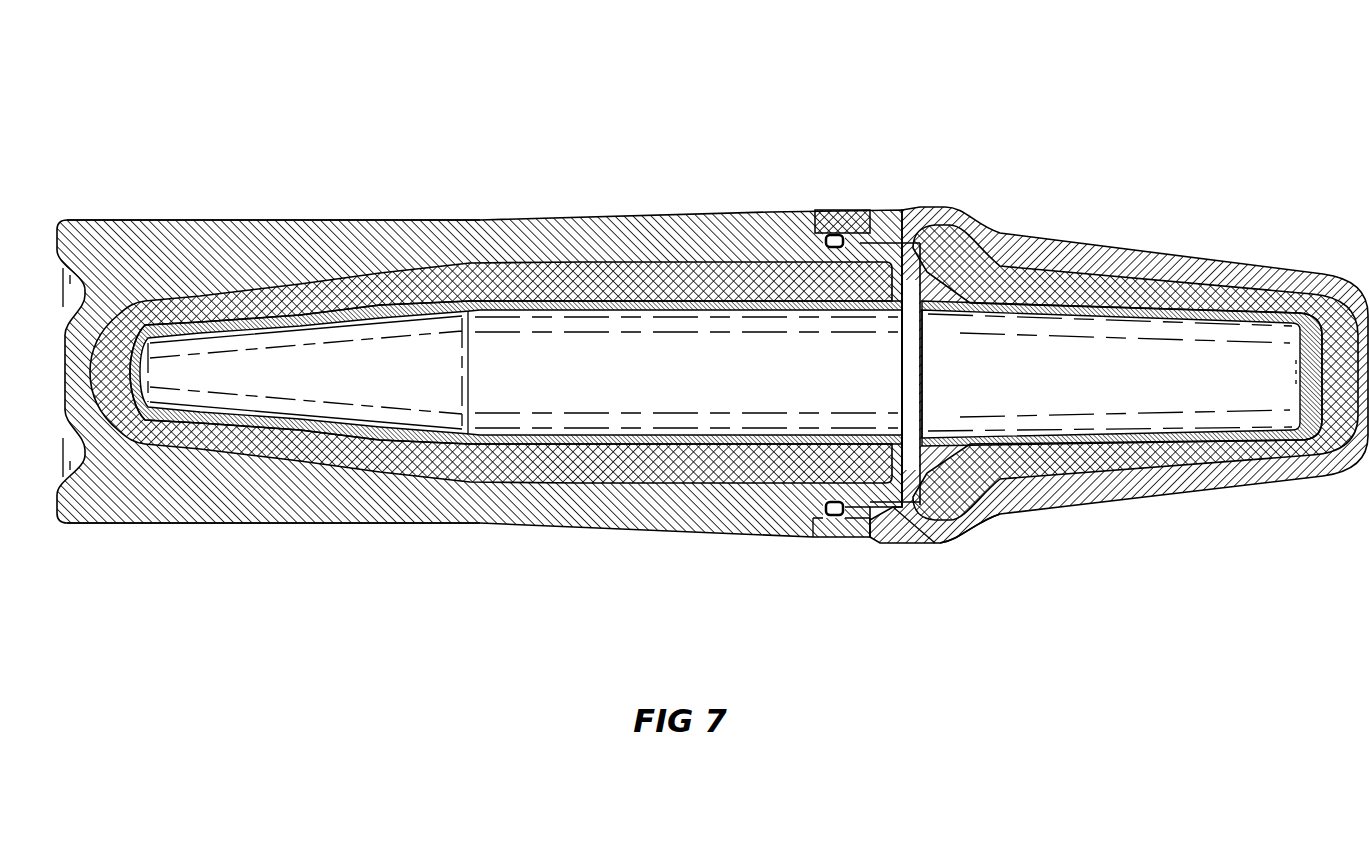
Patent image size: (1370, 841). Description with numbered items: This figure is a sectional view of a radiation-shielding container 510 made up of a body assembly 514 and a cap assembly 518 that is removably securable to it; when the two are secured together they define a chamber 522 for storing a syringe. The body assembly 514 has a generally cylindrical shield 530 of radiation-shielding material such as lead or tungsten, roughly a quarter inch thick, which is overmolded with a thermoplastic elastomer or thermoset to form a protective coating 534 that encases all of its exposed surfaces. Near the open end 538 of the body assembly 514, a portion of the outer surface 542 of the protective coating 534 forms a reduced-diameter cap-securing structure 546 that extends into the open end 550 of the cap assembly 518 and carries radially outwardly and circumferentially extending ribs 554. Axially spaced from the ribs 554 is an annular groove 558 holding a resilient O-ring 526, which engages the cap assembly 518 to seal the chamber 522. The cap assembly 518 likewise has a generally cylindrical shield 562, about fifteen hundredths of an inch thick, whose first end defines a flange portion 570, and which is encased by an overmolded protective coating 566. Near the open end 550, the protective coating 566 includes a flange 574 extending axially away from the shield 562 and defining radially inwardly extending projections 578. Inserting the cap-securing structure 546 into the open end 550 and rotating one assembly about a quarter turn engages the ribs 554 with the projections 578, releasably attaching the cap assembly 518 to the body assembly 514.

The container 510 is at (690, 108).
The body assembly 514 is at (340, 190).
The cap assembly 518 is at (1130, 193).
The chamber 522 is at (745, 395).
The resilient O-ring 526 is at (840, 537).
The shield 530 is at (390, 455).
The protective coating 534 is at (290, 490).
The open end 538 is at (883, 345).
The outer surface 542 is at (813, 209).
The cap-securing structure 546 is at (852, 226).
The open end 550 is at (928, 368).
The ribs 554 is at (888, 535).
The annular groove 558 is at (850, 485).
The shield 562 is at (1200, 463).
The protective coating 566 is at (1265, 492).
The flange portion 570 is at (997, 514).
The flange 574 is at (836, 540).
The projections 578 is at (920, 535).